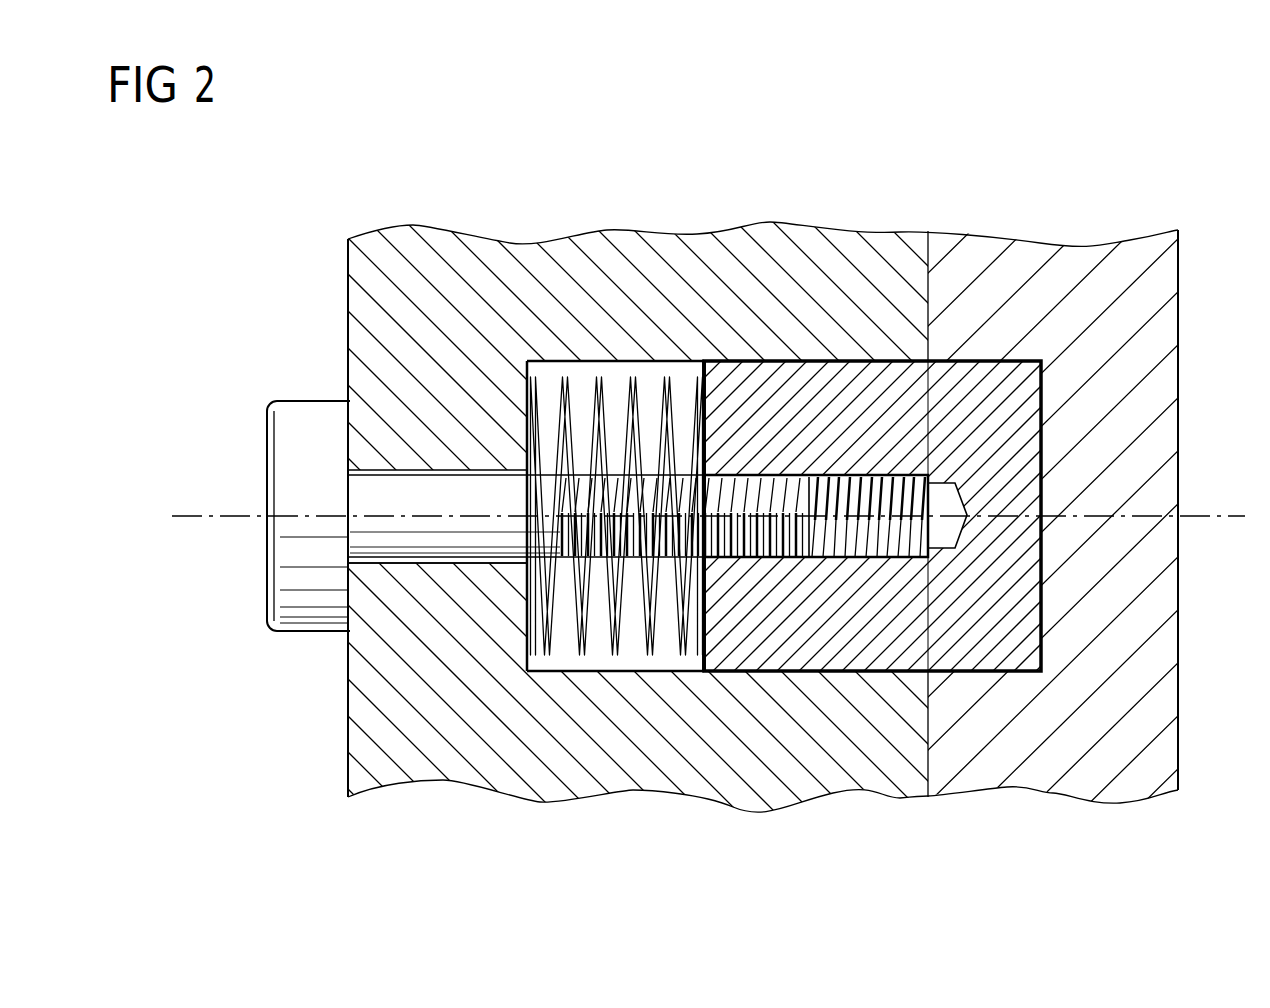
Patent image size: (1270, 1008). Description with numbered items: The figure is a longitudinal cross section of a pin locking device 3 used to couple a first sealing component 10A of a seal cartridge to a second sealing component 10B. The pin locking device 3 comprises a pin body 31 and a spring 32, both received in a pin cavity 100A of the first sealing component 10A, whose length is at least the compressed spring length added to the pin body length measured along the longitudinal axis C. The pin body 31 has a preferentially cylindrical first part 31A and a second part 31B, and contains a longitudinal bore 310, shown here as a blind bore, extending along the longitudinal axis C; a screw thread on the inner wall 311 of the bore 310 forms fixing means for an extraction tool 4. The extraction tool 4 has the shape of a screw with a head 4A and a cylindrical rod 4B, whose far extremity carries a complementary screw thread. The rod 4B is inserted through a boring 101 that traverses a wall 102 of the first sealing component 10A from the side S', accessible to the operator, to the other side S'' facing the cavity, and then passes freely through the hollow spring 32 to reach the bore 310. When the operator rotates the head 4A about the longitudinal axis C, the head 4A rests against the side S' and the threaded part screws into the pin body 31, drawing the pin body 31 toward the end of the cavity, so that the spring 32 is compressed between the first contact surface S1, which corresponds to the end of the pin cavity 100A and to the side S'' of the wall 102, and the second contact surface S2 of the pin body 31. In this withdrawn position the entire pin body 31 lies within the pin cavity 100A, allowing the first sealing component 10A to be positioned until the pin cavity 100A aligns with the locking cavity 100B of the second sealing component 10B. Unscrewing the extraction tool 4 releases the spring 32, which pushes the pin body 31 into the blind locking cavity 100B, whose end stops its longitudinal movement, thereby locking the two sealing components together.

The first sealing component 10A is at (378, 277).
The second sealing component 10B is at (1123, 268).
The wall 102 is at (443, 455).
The boring 101 is at (441, 565).
The pin cavity 100A is at (617, 377).
The locking cavity 100B is at (1015, 366).
The side S' is at (305, 501).
The first contact surface S1 is at (534, 417).
The other side S'' is at (534, 417).
The second contact surface S2 is at (697, 372).
The pin locking device 3 is at (731, 706).
The pin body 31 is at (983, 617).
The first part 31A is at (760, 393).
The second part 31B is at (970, 400).
The longitudinal bore 310 is at (860, 473).
The inner wall 311 is at (851, 557).
The spring 32 is at (584, 626).
The extraction tool 4 is at (317, 407).
The head 4A is at (295, 578).
The cylindrical rod 4B is at (378, 495).
The longitudinal axis C is at (720, 470).